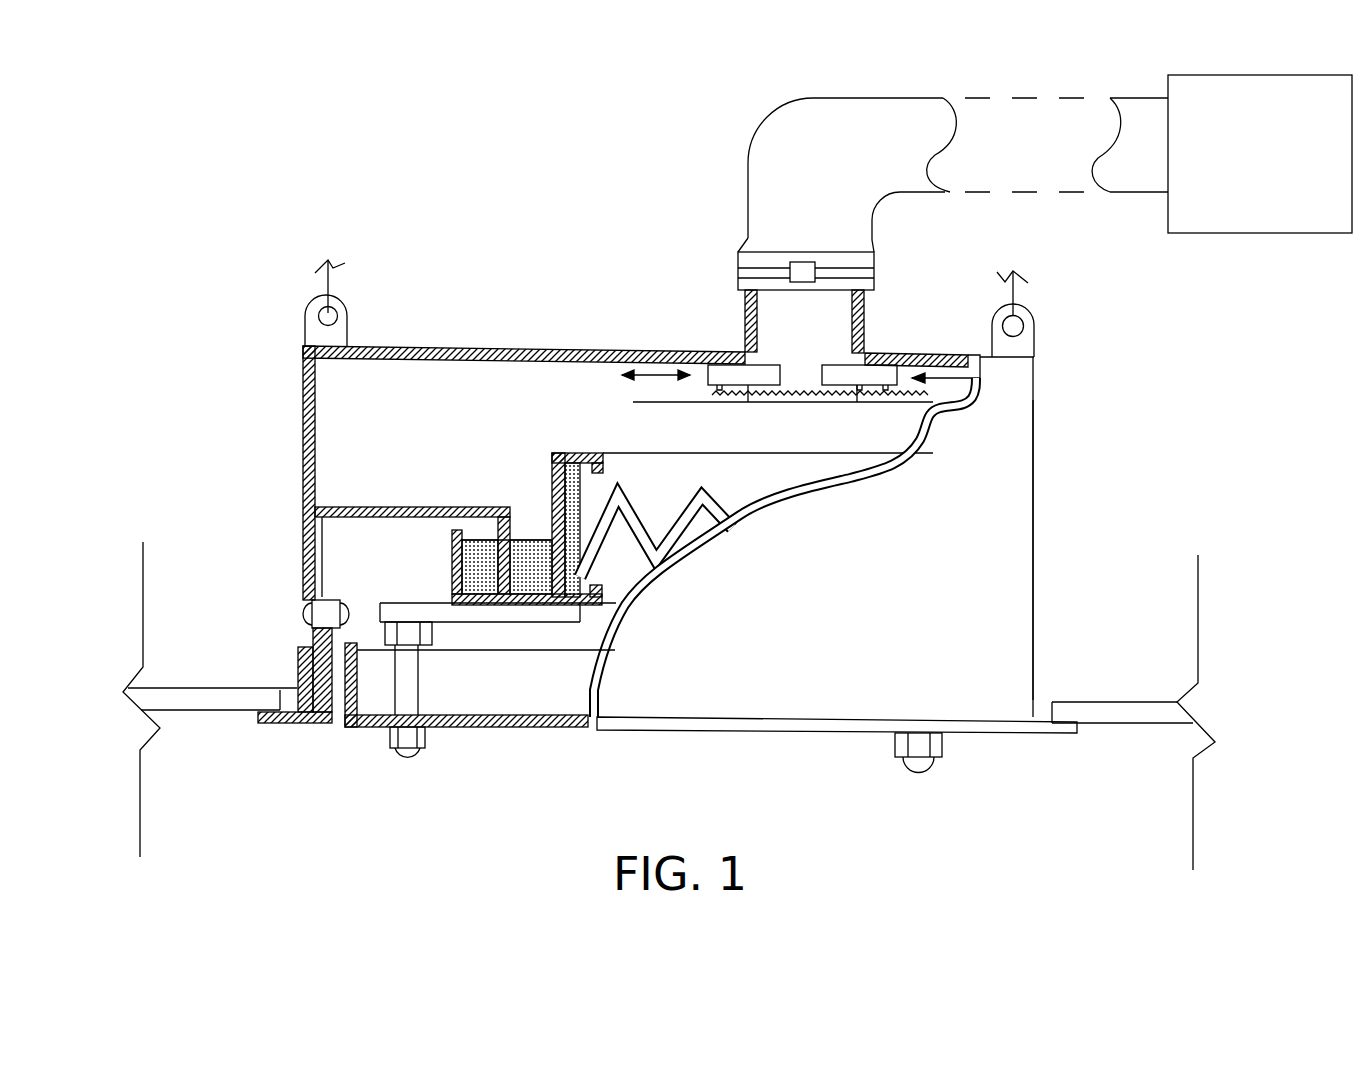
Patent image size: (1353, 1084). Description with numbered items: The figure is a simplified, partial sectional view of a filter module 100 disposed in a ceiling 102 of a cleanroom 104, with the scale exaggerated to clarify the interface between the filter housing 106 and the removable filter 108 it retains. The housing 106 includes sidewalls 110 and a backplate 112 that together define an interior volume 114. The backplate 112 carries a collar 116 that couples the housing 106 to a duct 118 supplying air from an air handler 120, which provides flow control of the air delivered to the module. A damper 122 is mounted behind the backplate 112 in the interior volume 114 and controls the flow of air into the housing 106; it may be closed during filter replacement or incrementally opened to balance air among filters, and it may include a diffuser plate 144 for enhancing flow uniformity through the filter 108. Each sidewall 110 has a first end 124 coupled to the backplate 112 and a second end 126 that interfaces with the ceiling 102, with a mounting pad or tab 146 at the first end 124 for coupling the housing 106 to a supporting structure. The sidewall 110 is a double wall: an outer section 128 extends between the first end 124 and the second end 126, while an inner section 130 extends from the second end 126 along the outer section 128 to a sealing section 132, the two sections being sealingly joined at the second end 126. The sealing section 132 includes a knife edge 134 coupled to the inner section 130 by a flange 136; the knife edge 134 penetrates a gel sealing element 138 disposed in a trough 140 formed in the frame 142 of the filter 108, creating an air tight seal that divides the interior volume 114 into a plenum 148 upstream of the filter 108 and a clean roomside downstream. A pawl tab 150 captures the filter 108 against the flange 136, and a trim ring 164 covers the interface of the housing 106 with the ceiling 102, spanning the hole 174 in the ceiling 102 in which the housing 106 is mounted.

The filter module 100 is at (306, 225).
The ceiling 102 is at (185, 702).
The cleanroom 104 is at (680, 811).
The filter housing 106 is at (1035, 432).
The removable filter 108 is at (656, 484).
The sidewall 110 is at (302, 398).
The backplate 112 is at (423, 394).
The interior volume 114 is at (495, 421).
The collar 116 is at (868, 335).
The duct 118 is at (765, 170).
The air handler 120 is at (1245, 171).
The damper 122 is at (745, 352).
The first end 124 is at (303, 347).
The second end 126 is at (317, 725).
The outer section 128 is at (295, 683).
The inner section 130 is at (345, 527).
The sealing section 132 is at (367, 499).
The knife edge 134 is at (503, 530).
The flange 136 is at (438, 508).
The sealing element 138 is at (470, 603).
The trough 140 is at (519, 607).
The frame 142 is at (568, 607).
The diffuser plate 144 is at (746, 385).
The mounting pad or tab 146 is at (347, 312).
The plenum 148 is at (397, 346).
The pawl tab 150 is at (383, 627).
The trim ring 164 is at (305, 725).
The hole 174 is at (297, 682).